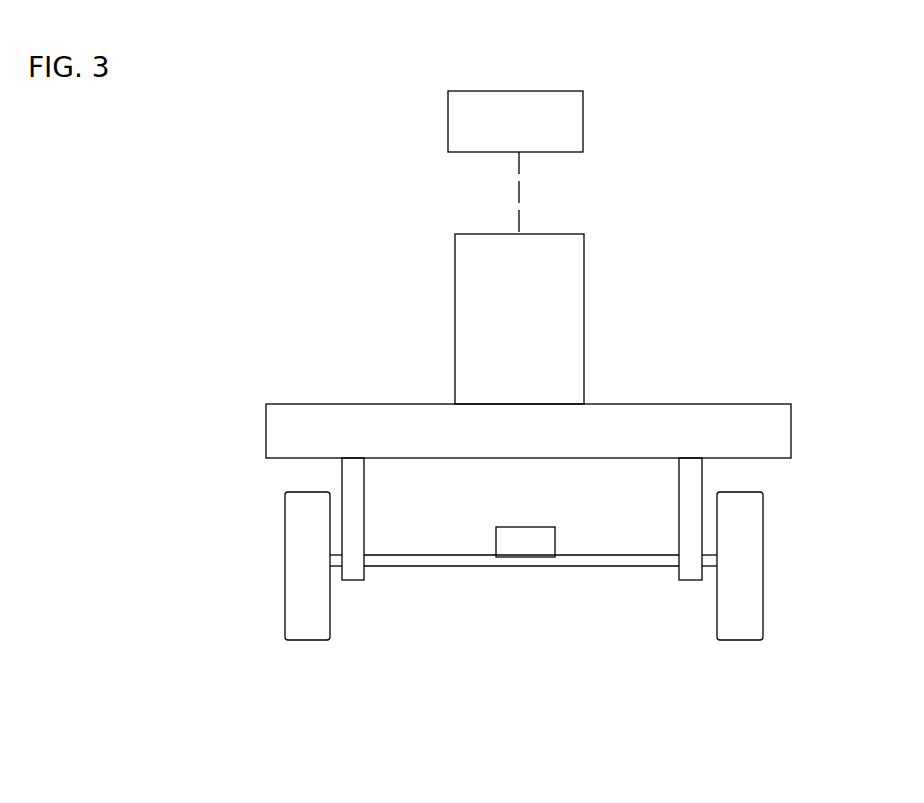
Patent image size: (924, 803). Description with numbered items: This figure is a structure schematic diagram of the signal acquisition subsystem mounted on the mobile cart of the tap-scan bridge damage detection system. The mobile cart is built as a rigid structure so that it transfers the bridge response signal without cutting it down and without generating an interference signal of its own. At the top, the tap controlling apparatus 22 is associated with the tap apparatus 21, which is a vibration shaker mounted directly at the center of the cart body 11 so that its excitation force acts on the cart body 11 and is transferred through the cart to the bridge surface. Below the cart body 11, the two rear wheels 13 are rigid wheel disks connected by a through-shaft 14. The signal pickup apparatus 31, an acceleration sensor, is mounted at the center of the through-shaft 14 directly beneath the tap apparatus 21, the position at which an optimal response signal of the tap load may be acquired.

The cart body 11 is at (715, 415).
The rear wheels 13 is at (305, 527).
The through-shaft 14 is at (427, 566).
The tap apparatus 21 is at (572, 283).
The tap controlling apparatus 22 is at (543, 103).
The signal pickup apparatus 31 is at (535, 547).